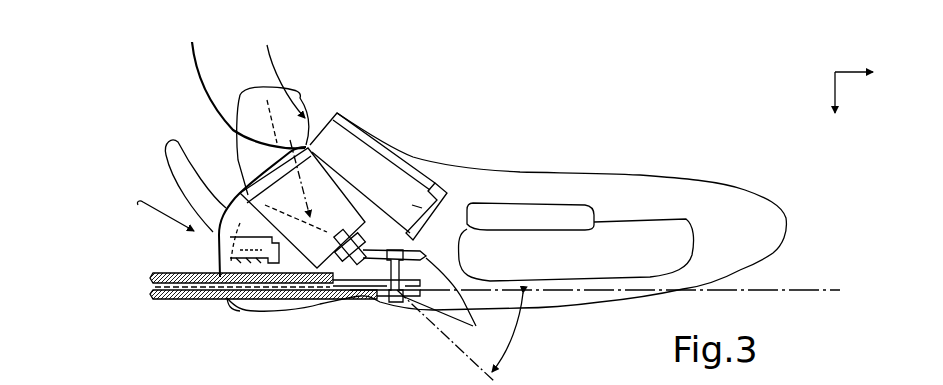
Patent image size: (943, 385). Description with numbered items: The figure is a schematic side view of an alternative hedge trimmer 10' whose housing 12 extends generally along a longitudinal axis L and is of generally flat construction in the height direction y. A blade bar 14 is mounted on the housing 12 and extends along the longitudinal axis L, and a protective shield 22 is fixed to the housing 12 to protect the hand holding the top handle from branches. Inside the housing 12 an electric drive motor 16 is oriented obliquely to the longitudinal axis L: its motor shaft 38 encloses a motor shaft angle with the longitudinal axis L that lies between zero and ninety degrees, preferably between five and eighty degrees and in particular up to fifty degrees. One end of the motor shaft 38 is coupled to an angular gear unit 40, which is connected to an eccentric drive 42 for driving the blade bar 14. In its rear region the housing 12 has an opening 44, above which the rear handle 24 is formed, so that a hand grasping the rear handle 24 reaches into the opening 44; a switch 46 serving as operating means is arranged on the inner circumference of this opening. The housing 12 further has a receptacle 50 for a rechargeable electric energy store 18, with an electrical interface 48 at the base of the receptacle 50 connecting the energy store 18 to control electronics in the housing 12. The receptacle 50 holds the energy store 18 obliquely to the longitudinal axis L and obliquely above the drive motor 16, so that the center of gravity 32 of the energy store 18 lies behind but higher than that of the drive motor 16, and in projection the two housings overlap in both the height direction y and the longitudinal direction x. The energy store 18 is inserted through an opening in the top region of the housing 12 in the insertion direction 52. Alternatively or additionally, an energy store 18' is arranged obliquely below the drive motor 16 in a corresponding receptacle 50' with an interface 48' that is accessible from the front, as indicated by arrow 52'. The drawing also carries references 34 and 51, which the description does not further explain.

The hedge trimmer 10' is at (576, 145).
The housing 12 is at (493, 182).
The blade bar 14 is at (188, 295).
The electric drive motor 16 is at (310, 266).
The electric energy store 18 is at (445, 139).
The energy store 18' is at (178, 237).
The protective shield 22 is at (163, 143).
The rear handle 24 is at (627, 200).
The center of gravity of the energy store 32 is at (361, 178).
The pivot axis 34 is at (255, 198).
The motor shaft 38 is at (392, 178).
The angular gear unit 40 is at (411, 303).
The eccentric drive 42 is at (376, 306).
The opening 44 is at (678, 237).
The switch 46 is at (570, 213).
The electrical interface 48 is at (505, 126).
The interface 48' is at (163, 256).
The receptacle 50 is at (354, 75).
The receptacle 50' is at (150, 182).
The pivoting path 51 is at (240, 83).
The insertion direction 52 is at (293, 67).
The arrow 52' is at (120, 178).
The longitudinal axis L is at (800, 290).
The longitudinal direction x is at (844, 72).
The height direction y is at (835, 104).